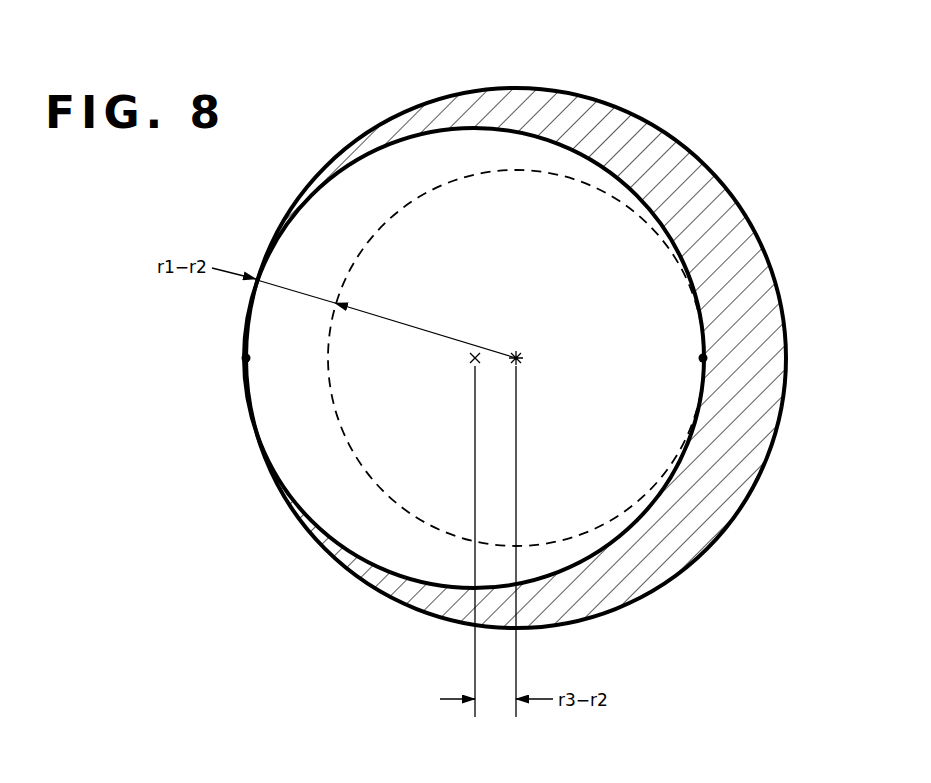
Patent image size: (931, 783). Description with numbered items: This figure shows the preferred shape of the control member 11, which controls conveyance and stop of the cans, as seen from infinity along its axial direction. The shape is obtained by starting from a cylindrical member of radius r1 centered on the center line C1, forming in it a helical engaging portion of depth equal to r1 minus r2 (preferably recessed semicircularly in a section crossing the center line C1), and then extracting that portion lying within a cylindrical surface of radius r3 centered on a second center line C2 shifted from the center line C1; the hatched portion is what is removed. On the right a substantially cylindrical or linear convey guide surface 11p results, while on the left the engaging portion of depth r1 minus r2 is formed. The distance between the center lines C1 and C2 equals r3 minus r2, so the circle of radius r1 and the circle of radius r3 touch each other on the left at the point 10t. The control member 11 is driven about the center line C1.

The control member 11 is at (512, 128).
The tangent contact point 10t is at (246, 358).
The convey guide surface 11p is at (703, 358).
The center line C1 is at (517, 361).
The center line C2 is at (474, 361).
The radius r1 is at (516, 358).
The radius r2 is at (516, 356).
The radius r3 is at (475, 358).